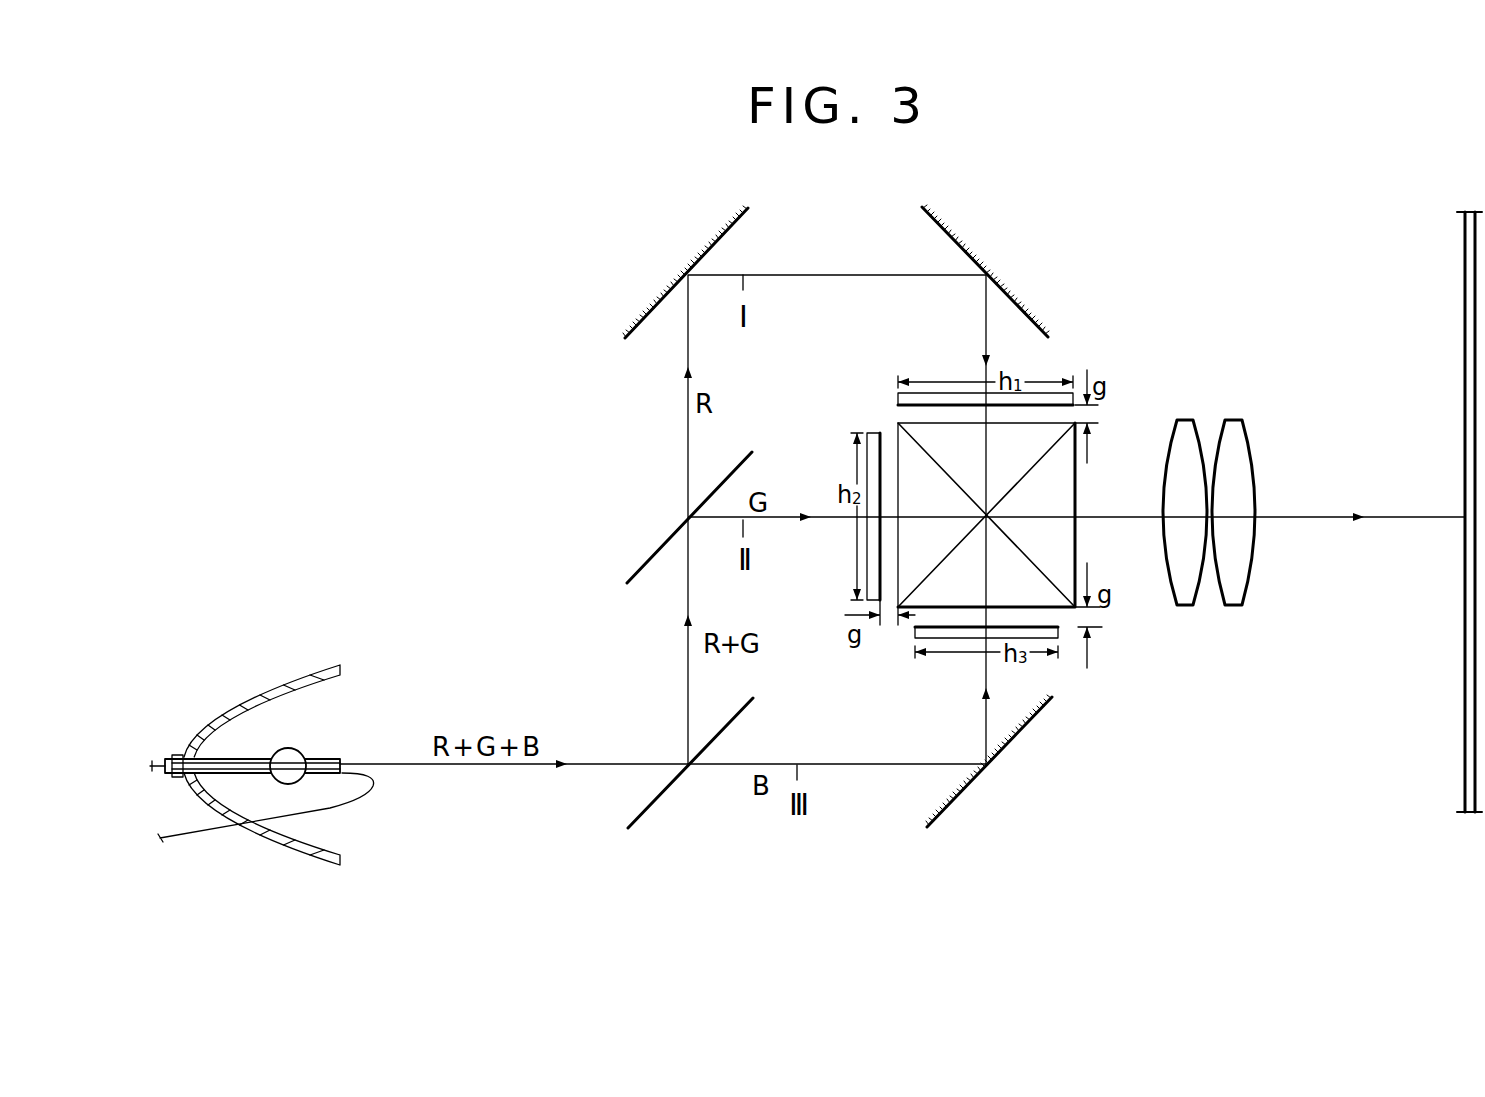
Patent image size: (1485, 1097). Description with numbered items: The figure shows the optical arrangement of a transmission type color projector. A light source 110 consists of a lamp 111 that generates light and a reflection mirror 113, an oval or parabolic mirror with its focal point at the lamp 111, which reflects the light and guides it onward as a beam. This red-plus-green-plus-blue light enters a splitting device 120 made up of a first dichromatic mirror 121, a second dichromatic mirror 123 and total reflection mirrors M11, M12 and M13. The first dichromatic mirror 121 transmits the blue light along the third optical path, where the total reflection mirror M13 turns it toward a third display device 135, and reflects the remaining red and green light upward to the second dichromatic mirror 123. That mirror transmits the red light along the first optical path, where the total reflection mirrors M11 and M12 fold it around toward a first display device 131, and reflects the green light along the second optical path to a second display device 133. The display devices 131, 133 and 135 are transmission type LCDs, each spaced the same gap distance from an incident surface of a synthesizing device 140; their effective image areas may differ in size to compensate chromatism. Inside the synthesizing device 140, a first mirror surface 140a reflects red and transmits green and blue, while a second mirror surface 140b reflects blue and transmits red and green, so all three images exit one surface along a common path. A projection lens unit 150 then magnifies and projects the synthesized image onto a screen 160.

The light source 110 is at (258, 651).
The lamp 111 is at (290, 752).
The reflection mirror 113 is at (343, 678).
The splitting device 120 is at (527, 526).
The first dichromatic mirror 121 is at (660, 797).
The second dichromatic mirror 123 is at (645, 558).
The first display device 131 is at (925, 400).
The second display device 133 is at (873, 432).
The third display device 135 is at (917, 632).
The synthesizing device 140 is at (1084, 564).
The first mirror surface 140a is at (1035, 560).
The second mirror surface 140b is at (1043, 457).
The projection lens unit 150 is at (1220, 388).
The screen 160 is at (1465, 775).
The total reflection mirror M11 is at (627, 333).
The total reflection mirror M12 is at (920, 215).
The total reflection mirror M13 is at (947, 805).